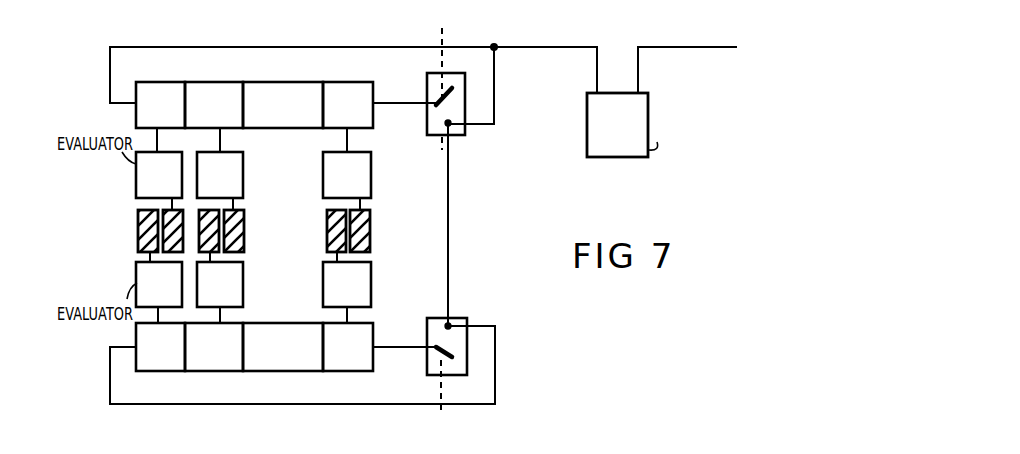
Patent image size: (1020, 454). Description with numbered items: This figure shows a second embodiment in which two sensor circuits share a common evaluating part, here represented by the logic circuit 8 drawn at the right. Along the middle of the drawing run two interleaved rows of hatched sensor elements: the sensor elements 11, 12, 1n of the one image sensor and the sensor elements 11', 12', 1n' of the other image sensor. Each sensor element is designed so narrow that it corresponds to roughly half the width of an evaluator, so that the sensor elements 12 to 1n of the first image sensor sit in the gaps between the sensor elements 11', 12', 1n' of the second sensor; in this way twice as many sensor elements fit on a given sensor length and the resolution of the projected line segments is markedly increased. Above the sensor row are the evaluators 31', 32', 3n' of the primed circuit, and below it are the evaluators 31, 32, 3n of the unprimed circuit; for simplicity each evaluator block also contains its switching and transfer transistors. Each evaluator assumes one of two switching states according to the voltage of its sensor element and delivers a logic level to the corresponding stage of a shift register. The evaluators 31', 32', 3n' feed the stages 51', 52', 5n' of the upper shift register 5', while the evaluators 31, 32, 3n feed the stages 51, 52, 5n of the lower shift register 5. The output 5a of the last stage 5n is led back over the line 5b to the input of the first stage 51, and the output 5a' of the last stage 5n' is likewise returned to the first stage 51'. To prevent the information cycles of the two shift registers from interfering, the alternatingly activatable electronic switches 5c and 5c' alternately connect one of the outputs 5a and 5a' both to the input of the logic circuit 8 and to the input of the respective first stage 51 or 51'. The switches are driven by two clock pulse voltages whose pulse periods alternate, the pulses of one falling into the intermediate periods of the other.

The shift register 5' is at (254, 90).
The shift register 5 is at (254, 362).
The output of stage 5n 5a is at (430, 320).
The output of stage 5n' 5a' is at (433, 130).
The line 5b is at (302, 381).
The electronic switch 5c is at (430, 362).
The electronic switch 5c' is at (429, 98).
The first stage of shift register 51 is at (160, 347).
The stage of shift register 52 is at (214, 347).
The last stage of shift register 5n is at (348, 347).
The first stage of shift register 51' is at (160, 105).
The stage of shift register 52' is at (214, 105).
The last stage of shift register 5n' is at (348, 105).
The evaluator 31 is at (159, 284).
The evaluator 32 is at (220, 284).
The evaluator 3n is at (347, 284).
The evaluator 31' is at (159, 175).
The evaluator 32' is at (220, 175).
The evaluator 3n' is at (347, 175).
The sensor element 11 is at (137, 231).
The sensor element 12 is at (242, 220).
The sensor element 1n is at (324, 231).
The sensor element 11' is at (143, 217).
The sensor element 12' is at (255, 232).
The sensor element 1n' is at (380, 231).
The logic circuit 8 is at (649, 125).